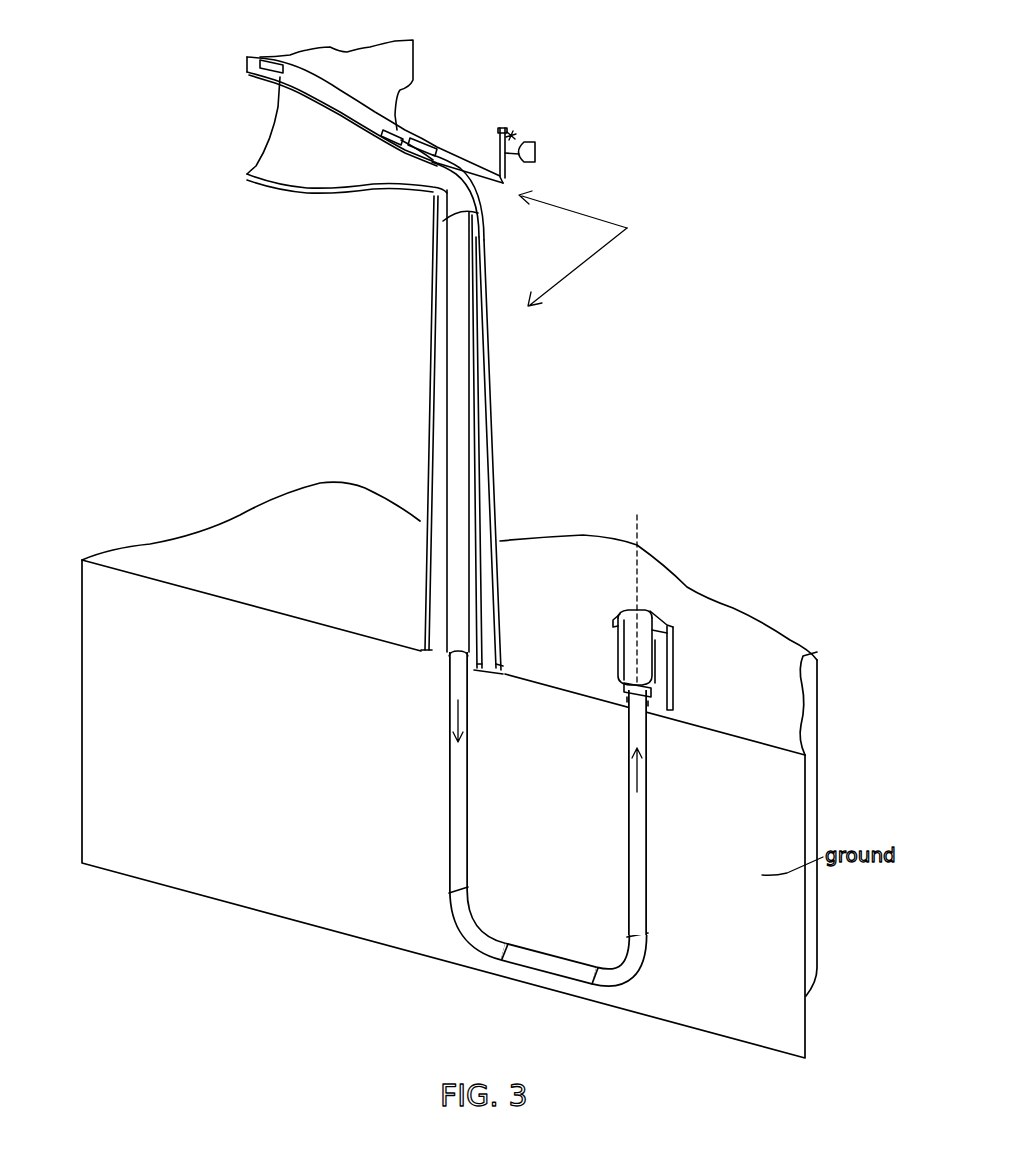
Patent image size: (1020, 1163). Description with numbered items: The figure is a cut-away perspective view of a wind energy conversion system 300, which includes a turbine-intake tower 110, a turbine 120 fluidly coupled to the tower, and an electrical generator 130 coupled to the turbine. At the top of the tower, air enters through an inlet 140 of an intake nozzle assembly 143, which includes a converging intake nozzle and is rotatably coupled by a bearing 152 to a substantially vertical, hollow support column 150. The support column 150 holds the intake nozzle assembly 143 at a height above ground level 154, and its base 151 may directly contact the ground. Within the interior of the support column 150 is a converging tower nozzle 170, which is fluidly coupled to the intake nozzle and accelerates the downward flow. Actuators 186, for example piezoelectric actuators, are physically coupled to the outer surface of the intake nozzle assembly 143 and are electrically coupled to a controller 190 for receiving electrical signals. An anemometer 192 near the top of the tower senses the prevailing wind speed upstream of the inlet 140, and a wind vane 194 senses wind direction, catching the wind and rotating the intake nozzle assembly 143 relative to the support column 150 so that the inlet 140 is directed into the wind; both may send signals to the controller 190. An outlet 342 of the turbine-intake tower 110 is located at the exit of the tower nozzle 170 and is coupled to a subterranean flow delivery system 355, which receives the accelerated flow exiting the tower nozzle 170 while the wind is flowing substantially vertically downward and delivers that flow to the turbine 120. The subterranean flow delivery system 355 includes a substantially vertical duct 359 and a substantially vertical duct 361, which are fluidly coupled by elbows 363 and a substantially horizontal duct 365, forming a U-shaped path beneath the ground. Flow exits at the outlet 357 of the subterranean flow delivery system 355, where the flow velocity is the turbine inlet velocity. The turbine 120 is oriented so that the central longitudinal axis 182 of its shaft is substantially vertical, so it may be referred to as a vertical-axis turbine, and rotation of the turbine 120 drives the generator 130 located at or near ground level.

The wind energy conversion system 300 is at (782, 70).
The turbine-intake tower 110 is at (597, 248).
The turbine 120 is at (657, 682).
The electrical generator 130 is at (643, 623).
The inlet 140 is at (277, 115).
The intake nozzle assembly 143 is at (297, 187).
The support column 150 is at (497, 443).
The base 151 is at (500, 668).
The bearing 152 is at (453, 210).
The ground level 154 is at (200, 550).
The converging tower nozzle 170 is at (445, 428).
The central longitudinal axis 182 is at (640, 525).
The actuators 186 is at (375, 97).
The controller 190 is at (422, 137).
The anemometer 192 is at (511, 133).
The wind vane 194 is at (535, 142).
The outlet 342 is at (443, 663).
The subterranean flow delivery system 355 is at (435, 750).
The outlet 357 is at (653, 720).
The substantially vertical duct 359 is at (451, 812).
The substantially vertical duct 361 is at (641, 841).
The elbows 363 is at (467, 930).
The substantially horizontal duct 365 is at (533, 960).